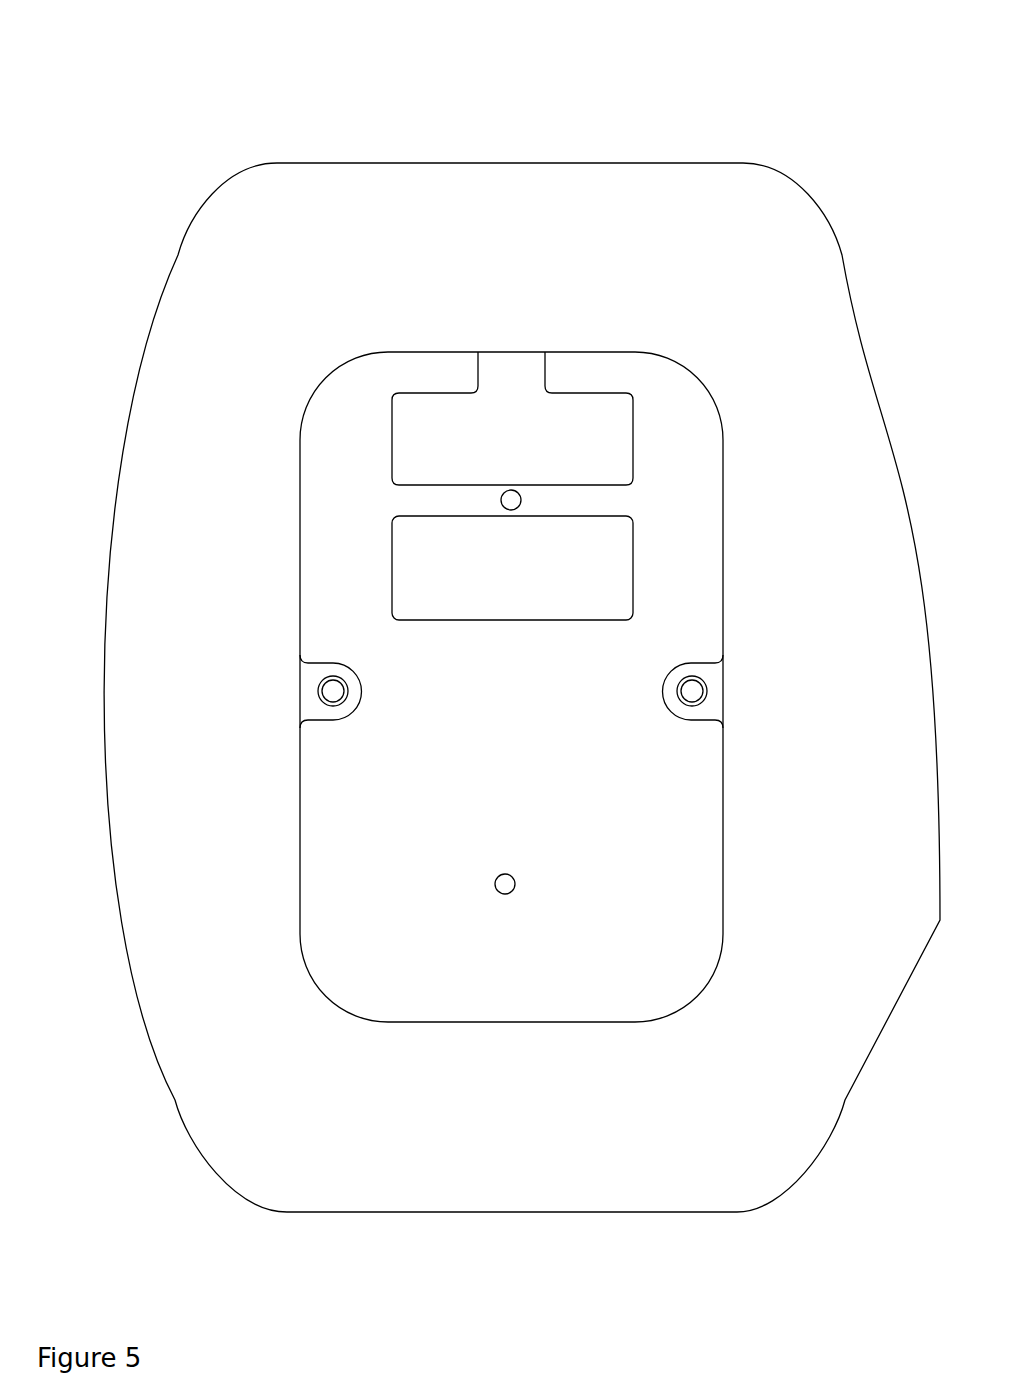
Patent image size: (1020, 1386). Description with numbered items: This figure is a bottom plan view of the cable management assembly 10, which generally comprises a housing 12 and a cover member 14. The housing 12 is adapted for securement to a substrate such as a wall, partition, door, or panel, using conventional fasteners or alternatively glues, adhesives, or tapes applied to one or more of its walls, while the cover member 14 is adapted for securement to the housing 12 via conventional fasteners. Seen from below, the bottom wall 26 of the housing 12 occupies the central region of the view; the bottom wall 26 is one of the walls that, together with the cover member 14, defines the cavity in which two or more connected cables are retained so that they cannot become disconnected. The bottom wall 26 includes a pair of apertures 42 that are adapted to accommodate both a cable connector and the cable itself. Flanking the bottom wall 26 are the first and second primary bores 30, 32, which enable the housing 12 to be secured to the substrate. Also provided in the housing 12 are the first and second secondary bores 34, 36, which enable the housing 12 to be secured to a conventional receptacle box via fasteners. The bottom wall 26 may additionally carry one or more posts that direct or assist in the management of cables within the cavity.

The cable management assembly 10 is at (506, 134).
The housing 12 is at (506, 994).
The cover member 14 is at (627, 1122).
The bottom wall 26 is at (497, 766).
The first primary bore 30 is at (692, 691).
The second primary bore 32 is at (333, 691).
The first secondary bore 34 is at (511, 500).
The second secondary bore 36 is at (505, 884).
The apertures 42 is at (499, 450).